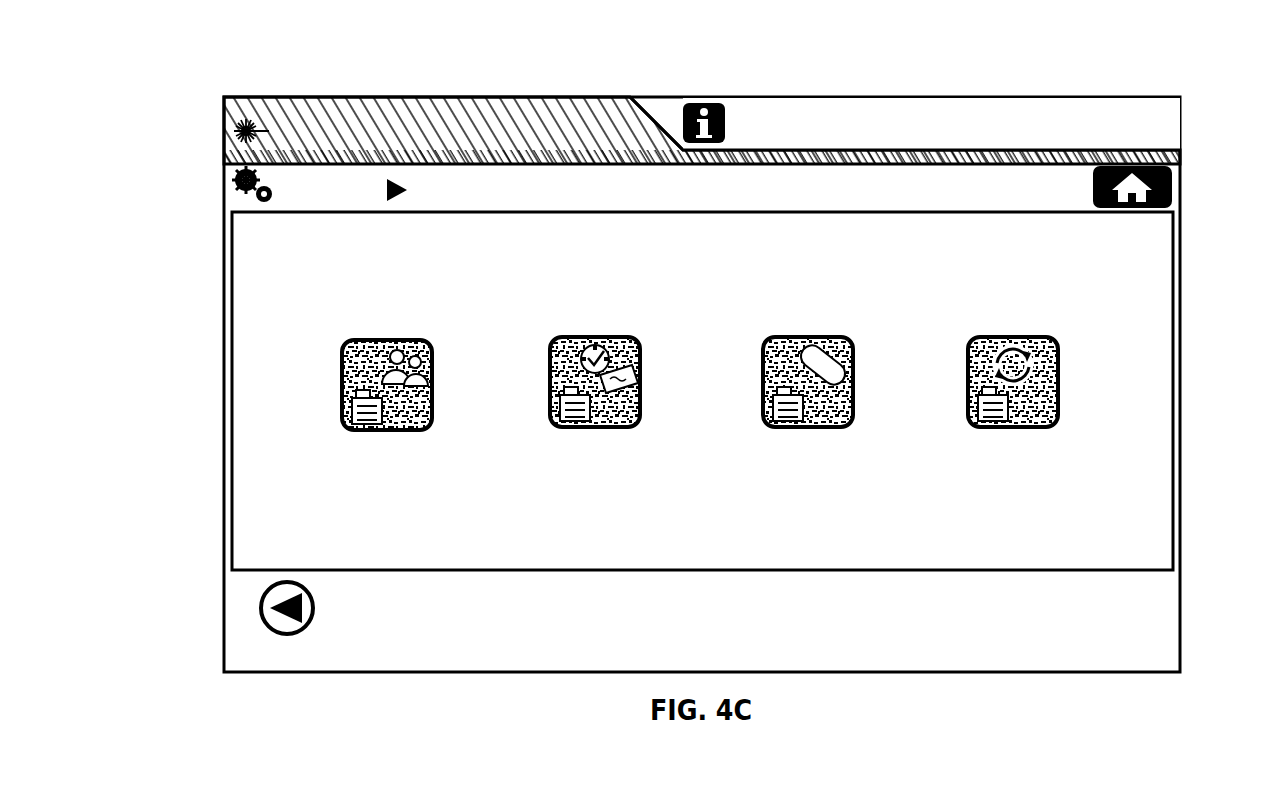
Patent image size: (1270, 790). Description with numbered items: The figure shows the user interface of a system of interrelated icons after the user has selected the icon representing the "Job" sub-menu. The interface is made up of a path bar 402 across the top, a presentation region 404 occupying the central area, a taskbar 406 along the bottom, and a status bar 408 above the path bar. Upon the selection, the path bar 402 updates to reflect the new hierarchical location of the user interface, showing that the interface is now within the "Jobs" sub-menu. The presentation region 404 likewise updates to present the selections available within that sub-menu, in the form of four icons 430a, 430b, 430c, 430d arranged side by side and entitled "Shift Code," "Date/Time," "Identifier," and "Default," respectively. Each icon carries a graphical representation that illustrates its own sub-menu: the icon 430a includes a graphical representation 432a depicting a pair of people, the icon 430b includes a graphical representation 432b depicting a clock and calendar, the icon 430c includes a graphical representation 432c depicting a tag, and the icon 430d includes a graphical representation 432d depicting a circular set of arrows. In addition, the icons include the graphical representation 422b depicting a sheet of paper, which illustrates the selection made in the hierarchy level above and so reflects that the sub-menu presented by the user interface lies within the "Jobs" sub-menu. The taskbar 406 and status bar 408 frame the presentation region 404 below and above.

The path bar 402 is at (473, 197).
The presentation region 404 is at (267, 358).
The taskbar 406 is at (1117, 613).
The status bar 408 is at (907, 105).
The graphical representation 422b is at (343, 417).
The icon 430a is at (349, 362).
The icon 430b is at (587, 362).
The icon 430c is at (798, 368).
The icon 430d is at (999, 353).
The graphical representation 432a is at (405, 343).
The graphical representation 432b is at (597, 343).
The graphical representation 432c is at (815, 338).
The graphical representation 432d is at (1025, 343).